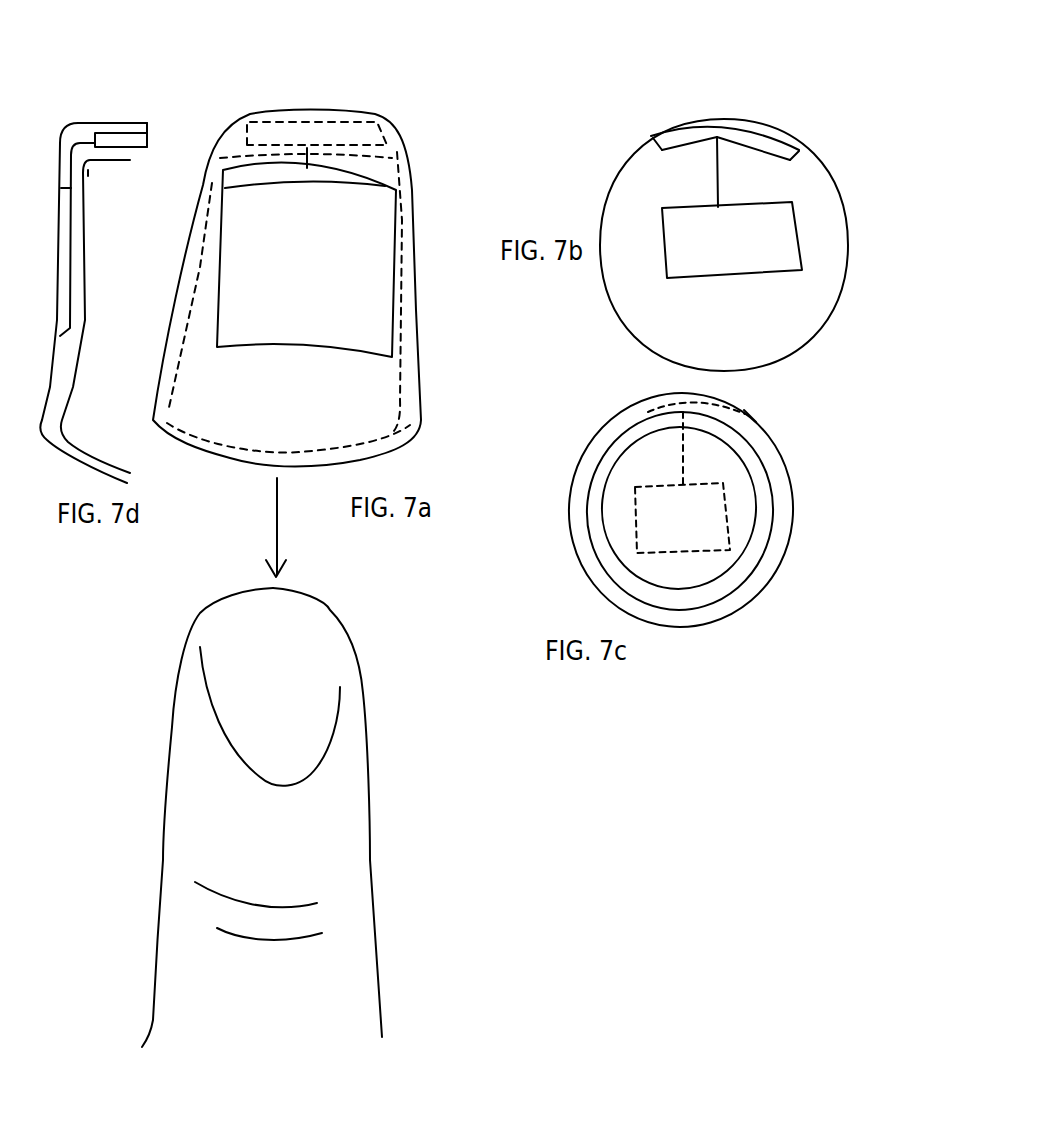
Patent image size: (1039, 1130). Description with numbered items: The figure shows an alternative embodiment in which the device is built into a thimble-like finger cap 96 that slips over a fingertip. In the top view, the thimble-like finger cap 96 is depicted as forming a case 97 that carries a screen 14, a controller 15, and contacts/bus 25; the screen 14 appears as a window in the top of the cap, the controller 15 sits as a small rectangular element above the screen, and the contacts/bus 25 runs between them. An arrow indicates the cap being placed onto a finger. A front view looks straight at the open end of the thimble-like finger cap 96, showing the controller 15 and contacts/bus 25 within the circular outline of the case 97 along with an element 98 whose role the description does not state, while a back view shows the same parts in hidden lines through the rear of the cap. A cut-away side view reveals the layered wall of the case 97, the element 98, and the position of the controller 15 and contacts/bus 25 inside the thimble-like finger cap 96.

In FIG. 7A, the screen 14 is at (363, 248).
In FIG. 7B, the screen 14 is at (777, 138).
In FIG. 7C, the screen 14 is at (745, 407).
In FIG. 7A, the controller 15 is at (370, 135).
In FIG. 7D, the controller 15 is at (137, 133).
In FIG. 7B, the controller 15 is at (678, 248).
In FIG. 7C, the controller 15 is at (657, 523).
In FIG. 7A, the contacts/bus 25 is at (307, 166).
In FIG. 7D, the contacts/bus 25 is at (88, 173).
In FIG. 7B, the contacts/bus 25 is at (720, 178).
In FIG. 7C, the contacts/bus 25 is at (678, 453).
In FIG. 7A, the thimble-like finger cap 96 is at (413, 166).
In FIG. 7D, the thimble-like finger cap 96 is at (63, 128).
In FIG. 7B, the thimble-like finger cap 96 is at (600, 183).
In FIG. 7C, the thimble-like finger cap 96 is at (570, 460).
In FIG. 7A, the case 97 is at (188, 296).
In FIG. 7D, the case 97 is at (83, 298).
In FIG. 7C, the case 97 is at (790, 507).
In FIG. 7A, the outer shell 98 is at (211, 160).
In FIG. 7D, the outer shell 98 is at (108, 123).
In FIG. 7B, the outer shell 98 is at (747, 332).
In FIG. 7C, the outer shell 98 is at (713, 466).